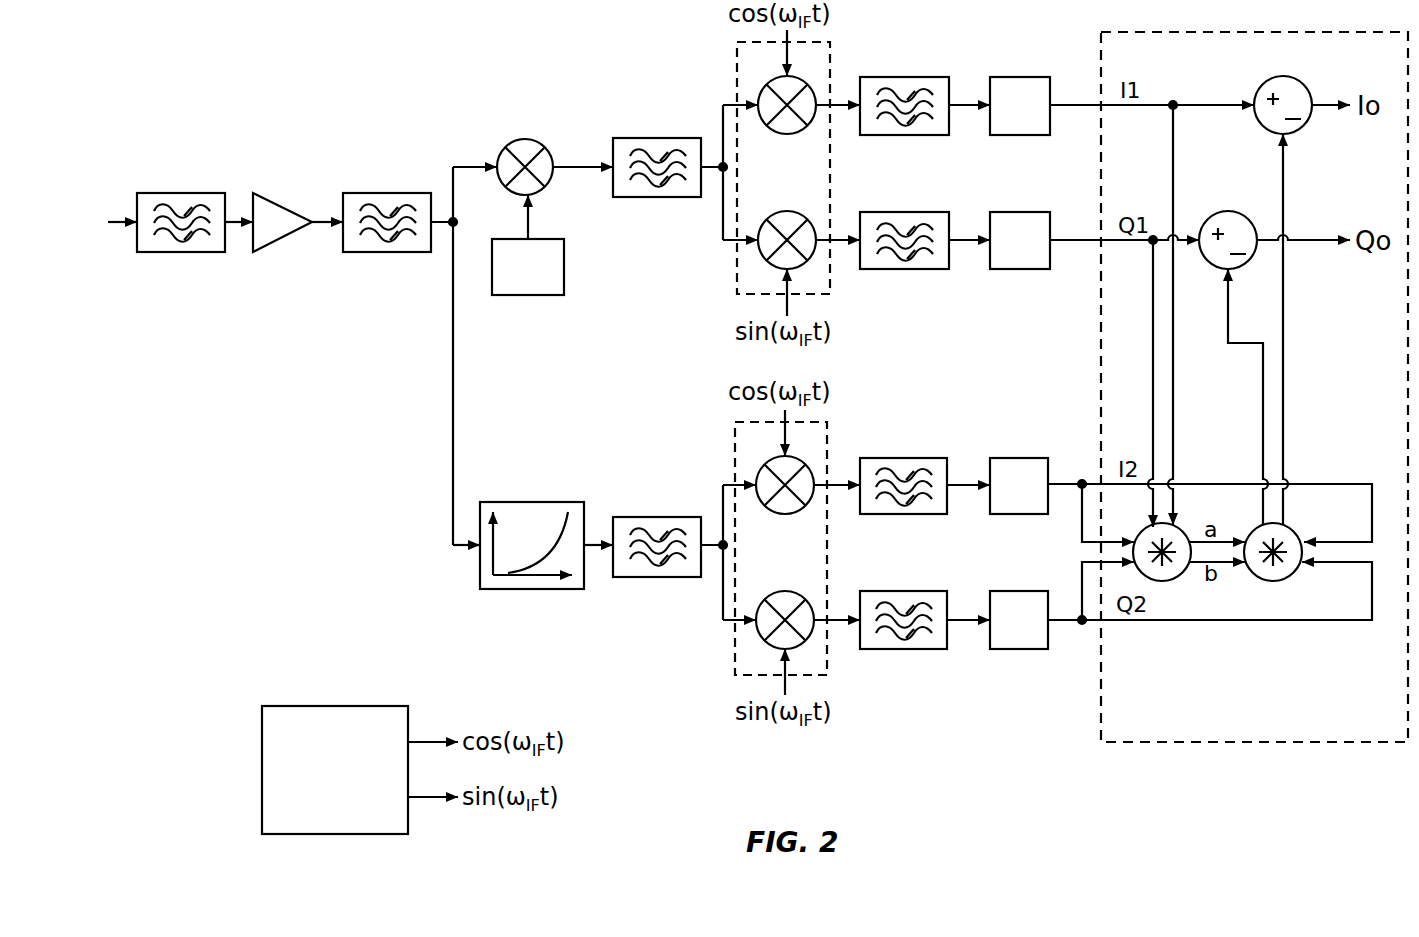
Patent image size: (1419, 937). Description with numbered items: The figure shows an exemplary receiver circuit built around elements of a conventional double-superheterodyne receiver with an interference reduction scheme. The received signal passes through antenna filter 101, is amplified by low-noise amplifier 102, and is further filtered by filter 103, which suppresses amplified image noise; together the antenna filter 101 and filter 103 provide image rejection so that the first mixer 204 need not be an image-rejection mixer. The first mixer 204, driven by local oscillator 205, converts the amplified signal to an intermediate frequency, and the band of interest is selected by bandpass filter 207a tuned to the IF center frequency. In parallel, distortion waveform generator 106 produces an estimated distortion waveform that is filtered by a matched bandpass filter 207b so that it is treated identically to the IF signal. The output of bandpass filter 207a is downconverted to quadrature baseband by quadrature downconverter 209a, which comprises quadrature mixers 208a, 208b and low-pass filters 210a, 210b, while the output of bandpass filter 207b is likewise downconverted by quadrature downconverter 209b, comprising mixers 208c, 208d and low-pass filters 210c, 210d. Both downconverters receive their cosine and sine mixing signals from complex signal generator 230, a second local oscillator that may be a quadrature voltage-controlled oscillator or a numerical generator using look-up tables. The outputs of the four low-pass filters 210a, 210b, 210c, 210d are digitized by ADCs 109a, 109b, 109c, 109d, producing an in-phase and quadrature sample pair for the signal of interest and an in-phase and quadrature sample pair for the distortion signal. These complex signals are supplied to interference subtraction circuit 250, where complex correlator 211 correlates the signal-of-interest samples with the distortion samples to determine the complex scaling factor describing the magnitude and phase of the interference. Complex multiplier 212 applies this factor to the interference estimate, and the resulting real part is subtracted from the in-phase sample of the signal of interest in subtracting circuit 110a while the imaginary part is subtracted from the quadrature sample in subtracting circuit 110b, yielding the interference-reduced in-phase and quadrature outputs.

The antenna filter 101 is at (195, 193).
The low-noise amplifier 102 is at (273, 198).
The filter 103 is at (366, 193).
The first mixer 204 is at (536, 141).
The local oscillator 205 is at (528, 245).
The bandpass filter 207a is at (627, 138).
The bandpass filter 207b is at (627, 517).
The quadrature mixer 208a is at (797, 78).
The quadrature mixer 208b is at (797, 213).
The mixer 208c is at (795, 458).
The mixer 208d is at (795, 593).
The quadrature downconverter 209a is at (783, 168).
The quadrature downconverter 209b is at (781, 548).
The low-pass filter 210a is at (920, 77).
The low-pass filter 210b is at (920, 212).
The low-pass filter 210c is at (920, 458).
The low-pass filter 210d is at (920, 591).
The ADC 109a is at (1012, 77).
The ADC 109b is at (1012, 212).
The ADC 109c is at (1012, 458).
The ADC 109d is at (1012, 591).
The subtracting circuit 110a is at (1301, 82).
The subtracting circuit 110b is at (1248, 212).
The complex correlator 211 is at (1182, 526).
The complex multiplier 212 is at (1292, 527).
The distortion waveform generator 106 is at (539, 595).
The complex signal generator 230 is at (360, 770).
The interference subtraction circuit 250 is at (1254, 387).